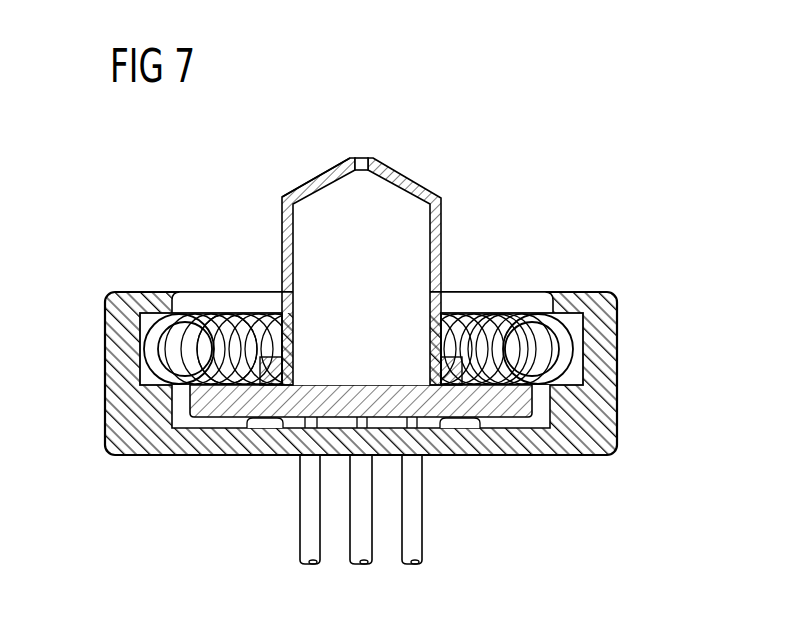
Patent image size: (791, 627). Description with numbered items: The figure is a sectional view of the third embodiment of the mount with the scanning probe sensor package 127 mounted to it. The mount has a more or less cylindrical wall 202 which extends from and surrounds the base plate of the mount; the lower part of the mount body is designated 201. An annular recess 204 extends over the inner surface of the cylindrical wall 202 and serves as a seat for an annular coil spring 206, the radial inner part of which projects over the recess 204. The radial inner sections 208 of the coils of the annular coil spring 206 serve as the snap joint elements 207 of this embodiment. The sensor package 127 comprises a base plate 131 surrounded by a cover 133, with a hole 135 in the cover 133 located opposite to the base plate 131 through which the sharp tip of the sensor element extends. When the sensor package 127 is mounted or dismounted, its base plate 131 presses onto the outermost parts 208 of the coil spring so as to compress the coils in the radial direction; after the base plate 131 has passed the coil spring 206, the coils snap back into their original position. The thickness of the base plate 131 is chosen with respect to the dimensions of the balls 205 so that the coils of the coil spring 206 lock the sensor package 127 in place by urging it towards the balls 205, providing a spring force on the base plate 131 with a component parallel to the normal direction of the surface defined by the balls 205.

The scanning probe sensor package 127 is at (318, 160).
The base plate 131 is at (350, 385).
The cover 133 is at (308, 182).
The hole 135 is at (360, 158).
The housing base 201 is at (533, 445).
The cylindrical wall 202 is at (608, 368).
The annular recess 204 is at (575, 323).
The balls 205 is at (258, 420).
The annular coil spring 206 is at (172, 322).
The snap joint elements 207 is at (230, 348).
The radial inner sections of the coils 208 is at (213, 342).